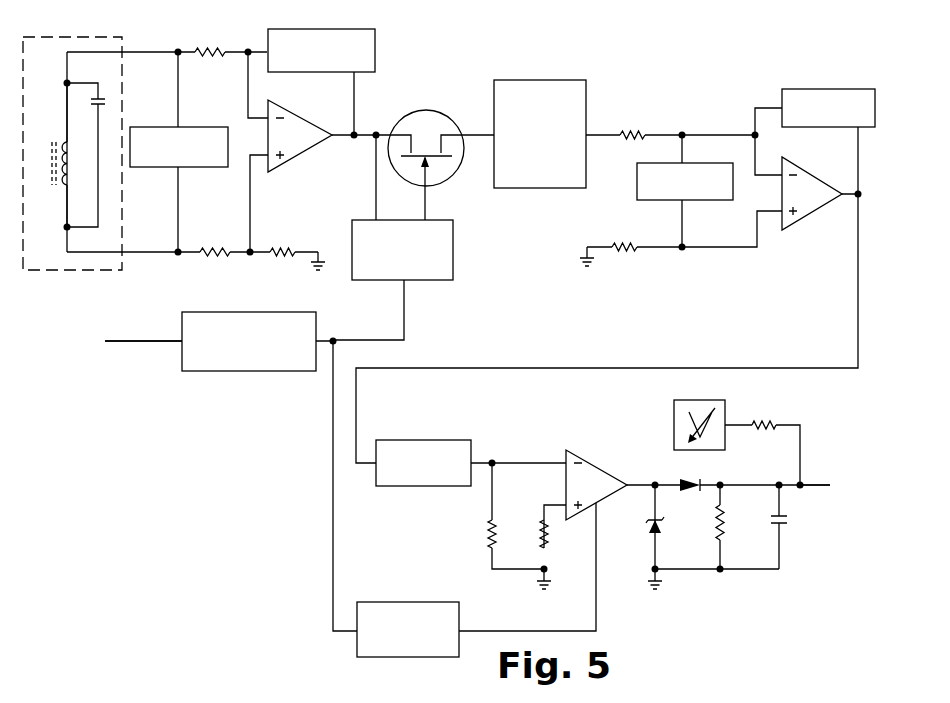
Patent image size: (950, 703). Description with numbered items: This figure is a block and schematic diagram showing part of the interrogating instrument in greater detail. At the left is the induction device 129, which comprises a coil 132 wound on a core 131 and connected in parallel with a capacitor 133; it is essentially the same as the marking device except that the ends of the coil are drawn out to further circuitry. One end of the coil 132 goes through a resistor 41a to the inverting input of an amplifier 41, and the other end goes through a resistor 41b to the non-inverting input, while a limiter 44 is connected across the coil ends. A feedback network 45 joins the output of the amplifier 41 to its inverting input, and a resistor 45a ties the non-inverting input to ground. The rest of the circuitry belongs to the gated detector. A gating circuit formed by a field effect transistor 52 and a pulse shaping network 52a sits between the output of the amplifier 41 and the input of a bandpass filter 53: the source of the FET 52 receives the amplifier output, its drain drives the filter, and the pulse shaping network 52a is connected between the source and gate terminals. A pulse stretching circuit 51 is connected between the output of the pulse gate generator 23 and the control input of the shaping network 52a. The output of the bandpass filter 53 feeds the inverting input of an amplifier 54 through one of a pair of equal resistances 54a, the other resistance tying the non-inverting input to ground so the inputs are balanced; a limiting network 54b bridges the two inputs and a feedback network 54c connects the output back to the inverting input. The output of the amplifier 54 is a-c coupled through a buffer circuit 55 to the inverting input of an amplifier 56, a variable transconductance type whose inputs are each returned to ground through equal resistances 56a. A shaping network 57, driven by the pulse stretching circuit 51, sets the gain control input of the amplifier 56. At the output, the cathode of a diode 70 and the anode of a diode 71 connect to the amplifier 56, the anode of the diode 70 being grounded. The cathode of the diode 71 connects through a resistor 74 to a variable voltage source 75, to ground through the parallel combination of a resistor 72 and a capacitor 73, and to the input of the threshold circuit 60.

The induction device 129 is at (110, 270).
The core 131 is at (52, 158).
The coil 132 is at (66, 172).
The capacitor 133 is at (105, 97).
The resistor 41a is at (201, 47).
The resistor 41b is at (204, 247).
The limiter 44 is at (192, 127).
The feedback network 45 is at (300, 72).
The amplifier 41 is at (298, 160).
The resistor 45a is at (281, 250).
The field effect transistor 52 is at (415, 110).
The pulse shaping network 52a is at (455, 248).
The bandpass filter 53 is at (568, 80).
The pair of equal resistances 54a is at (630, 246).
The limiting network 54b is at (690, 200).
The feedback network 54c is at (818, 87).
The amplifier 54 is at (795, 223).
The pulse stretching circuit 51 is at (292, 313).
The pulse gate generator 23 is at (106, 351).
The buffer circuit 55 is at (432, 440).
The amplifier 56 is at (585, 455).
The equal resistances 56a is at (540, 538).
The shaping network 57 is at (385, 602).
The diode 70 is at (651, 527).
The diode 71 is at (686, 483).
The resistor 72 is at (717, 522).
The capacitor 73 is at (772, 521).
The resistor 74 is at (770, 420).
The variable voltage source 75 is at (718, 400).
The threshold circuit 60 is at (842, 491).